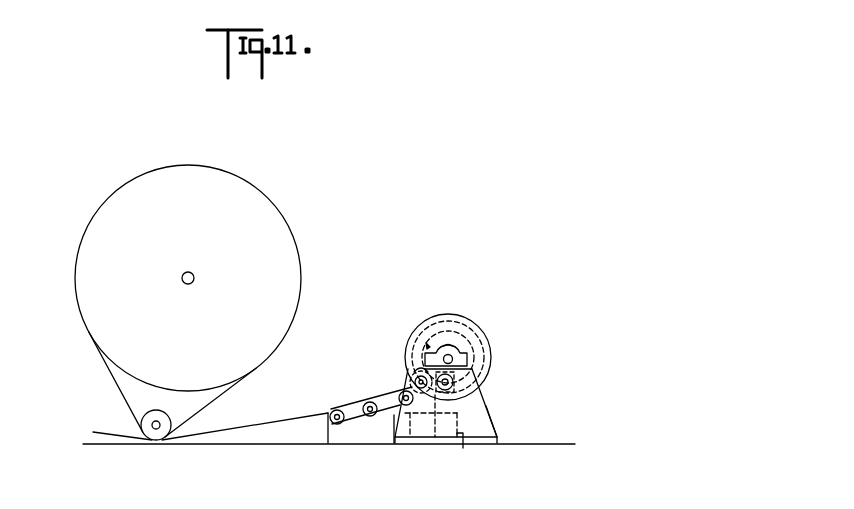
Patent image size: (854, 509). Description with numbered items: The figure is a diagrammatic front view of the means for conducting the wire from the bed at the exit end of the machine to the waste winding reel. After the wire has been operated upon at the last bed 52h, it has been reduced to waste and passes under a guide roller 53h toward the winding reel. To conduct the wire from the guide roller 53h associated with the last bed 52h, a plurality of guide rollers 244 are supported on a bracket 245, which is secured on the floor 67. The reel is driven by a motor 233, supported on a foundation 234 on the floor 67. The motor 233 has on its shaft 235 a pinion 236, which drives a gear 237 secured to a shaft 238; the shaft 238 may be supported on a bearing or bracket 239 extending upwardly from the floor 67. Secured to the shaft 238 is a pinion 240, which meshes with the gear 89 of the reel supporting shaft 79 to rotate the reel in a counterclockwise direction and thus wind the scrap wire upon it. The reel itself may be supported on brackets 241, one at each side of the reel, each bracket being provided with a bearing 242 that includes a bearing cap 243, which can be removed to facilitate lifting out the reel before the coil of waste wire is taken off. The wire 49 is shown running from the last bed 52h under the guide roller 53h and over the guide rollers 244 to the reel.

The last bed 52h is at (83, 290).
The web 49 is at (117, 386).
The guide roller 53h is at (158, 436).
The floor 67 is at (271, 445).
The bracket 245 is at (340, 441).
The foundation 234 is at (397, 417).
The guide rollers 244 is at (400, 393).
The motor 233 is at (412, 380).
The shaft 235 is at (418, 379).
The pinion 236 is at (421, 368).
The bearing 242 is at (428, 345).
The bearing cap 243 is at (450, 343).
The gear 89 is at (456, 343).
The reel supporting shaft 79 is at (452, 358).
The pinion 240 is at (453, 380).
The gear 237 is at (465, 390).
The shaft 238 is at (481, 399).
The brackets 241 is at (493, 433).
The bearing or bracket 239 is at (463, 440).